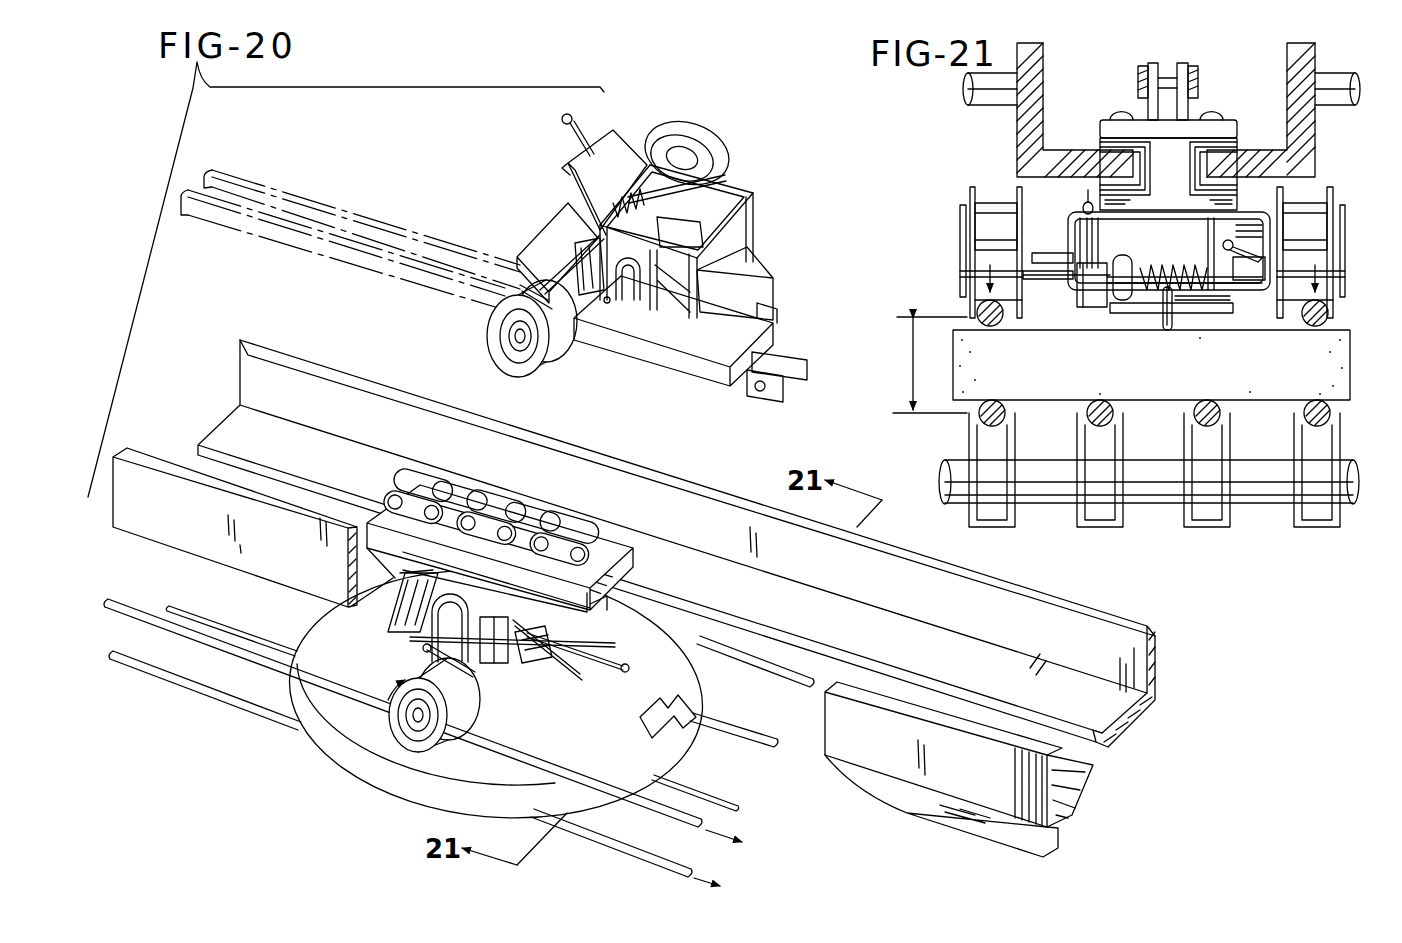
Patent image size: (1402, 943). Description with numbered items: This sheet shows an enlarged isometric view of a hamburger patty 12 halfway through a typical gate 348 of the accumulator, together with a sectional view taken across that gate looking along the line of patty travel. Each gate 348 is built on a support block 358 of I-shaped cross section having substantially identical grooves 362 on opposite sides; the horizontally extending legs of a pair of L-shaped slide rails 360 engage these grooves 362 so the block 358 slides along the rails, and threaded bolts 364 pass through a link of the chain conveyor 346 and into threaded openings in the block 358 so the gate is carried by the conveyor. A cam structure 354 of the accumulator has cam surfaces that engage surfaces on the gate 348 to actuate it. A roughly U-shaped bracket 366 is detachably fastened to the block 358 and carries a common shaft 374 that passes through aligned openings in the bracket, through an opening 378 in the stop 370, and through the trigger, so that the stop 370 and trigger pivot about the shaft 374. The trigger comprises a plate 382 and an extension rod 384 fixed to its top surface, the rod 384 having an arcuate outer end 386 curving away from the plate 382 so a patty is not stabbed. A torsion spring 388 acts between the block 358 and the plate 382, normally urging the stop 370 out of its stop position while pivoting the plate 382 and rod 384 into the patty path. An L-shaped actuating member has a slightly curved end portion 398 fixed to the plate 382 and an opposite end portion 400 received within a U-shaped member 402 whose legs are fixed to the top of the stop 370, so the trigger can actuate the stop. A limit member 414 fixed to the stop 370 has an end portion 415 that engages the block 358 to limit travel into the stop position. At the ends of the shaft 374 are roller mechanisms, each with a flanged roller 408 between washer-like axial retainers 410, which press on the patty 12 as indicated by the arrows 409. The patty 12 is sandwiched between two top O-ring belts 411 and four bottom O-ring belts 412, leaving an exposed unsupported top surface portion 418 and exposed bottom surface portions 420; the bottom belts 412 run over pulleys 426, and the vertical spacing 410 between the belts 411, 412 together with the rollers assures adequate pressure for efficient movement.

In FIG. 20, the patty 12 is at (396, 784).
In FIG. 21, the patty 12 is at (1005, 356).
In FIG. 20, the chain conveyor 346 is at (362, 216).
In FIG. 21, the chain conveyor 346 is at (1181, 62).
In FIG. 20, the gate 348 is at (775, 160).
In FIG. 20, the cam structure 354 is at (868, 800).
In FIG. 20, the support block 358 is at (606, 545).
In FIG. 21, the support block 358 is at (1128, 124).
In FIG. 20, the slide rails 360 is at (162, 533).
In FIG. 21, the slide rails 360 is at (1020, 125).
In FIG. 20, the grooves 362 is at (633, 560).
In FIG. 21, the grooves 362 is at (1112, 118).
In FIG. 21, the threaded bolts 364 is at (1211, 110).
In FIG. 20, the U-shaped bracket 366 is at (585, 222).
In FIG. 21, the U-shaped bracket 366 is at (1080, 206).
In FIG. 20, the stop 370 is at (760, 193).
In FIG. 20, the shaft 374 is at (498, 680).
In FIG. 21, the shaft 374 is at (1040, 290).
In FIG. 21, the opening in the stop 378 is at (1080, 300).
In FIG. 20, the trigger plate 382 is at (478, 665).
In FIG. 21, the trigger plate 382 is at (1110, 318).
In FIG. 20, the extension rod 384 is at (622, 678).
In FIG. 21, the extension rod 384 is at (1183, 312).
In FIG. 20, the arcuate outer end 386 is at (634, 672).
In FIG. 21, the arcuate outer end 386 is at (1167, 332).
In FIG. 20, the torsion spring 388 is at (626, 165).
In FIG. 21, the torsion spring 388 is at (1145, 265).
In FIG. 20, the end portion of actuating member 398 is at (586, 682).
In FIG. 20, the end portion of actuating member 400 is at (423, 650).
In FIG. 21, the end portion of actuating member 400 is at (1045, 252).
In FIG. 20, the U-shaped member 402 is at (428, 640).
In FIG. 21, the U-shaped member 402 is at (1090, 200).
In FIG. 20, the flanged roller 408 is at (470, 732).
In FIG. 21, the flanged roller 408 is at (985, 217).
In FIG. 21, the arrows 409 is at (968, 273).
In FIG. 20, the axial retainers 410 is at (398, 690).
In FIG. 21, the axial retainers 410 is at (962, 233).
In FIG. 20, the top O-ring belts 411 is at (242, 626).
In FIG. 21, the top O-ring belts 411 is at (976, 312).
In FIG. 20, the bottom O-ring belts 412 is at (185, 608).
In FIG. 21, the bottom O-ring belts 412 is at (1006, 420).
In FIG. 20, the limit member 414 is at (702, 190).
In FIG. 21, the end portion of limit member 415 is at (1222, 246).
In FIG. 21, the exposed unsupported top surface portion 418 is at (1120, 316).
In FIG. 21, the exposed unsupported bottom surface portions 420 is at (1157, 400).
In FIG. 21, the pulleys 426 is at (1312, 510).